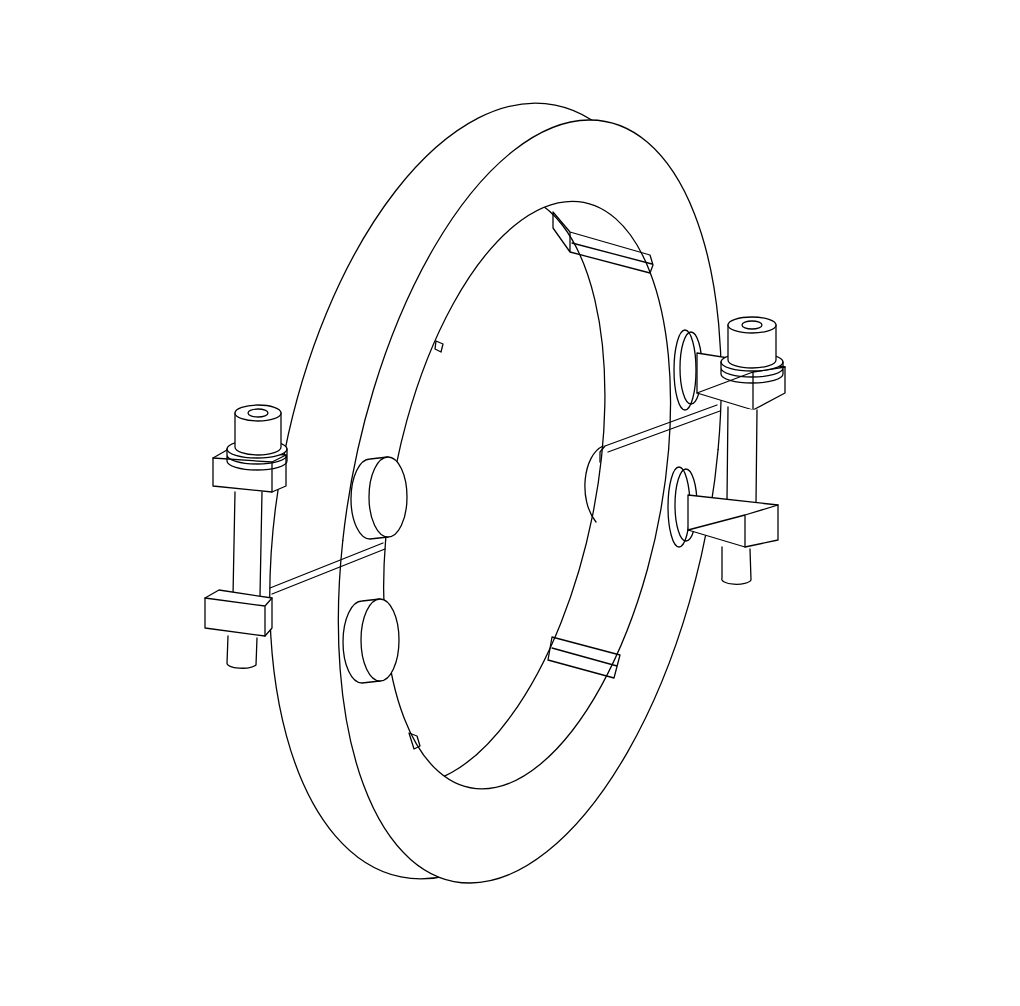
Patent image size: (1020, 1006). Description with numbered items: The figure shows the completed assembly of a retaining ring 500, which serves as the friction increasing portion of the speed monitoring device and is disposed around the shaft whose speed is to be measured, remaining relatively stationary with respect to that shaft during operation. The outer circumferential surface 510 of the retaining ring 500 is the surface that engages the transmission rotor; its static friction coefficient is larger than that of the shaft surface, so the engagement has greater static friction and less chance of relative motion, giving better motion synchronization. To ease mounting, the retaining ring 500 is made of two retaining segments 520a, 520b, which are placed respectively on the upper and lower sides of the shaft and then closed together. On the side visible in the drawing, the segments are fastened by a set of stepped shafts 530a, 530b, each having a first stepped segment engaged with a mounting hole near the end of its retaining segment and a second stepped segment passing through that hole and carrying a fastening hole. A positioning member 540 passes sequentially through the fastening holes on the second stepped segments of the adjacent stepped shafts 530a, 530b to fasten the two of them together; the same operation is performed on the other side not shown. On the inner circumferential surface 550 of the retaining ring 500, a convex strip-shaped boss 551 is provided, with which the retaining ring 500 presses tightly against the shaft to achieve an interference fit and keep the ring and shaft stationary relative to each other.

The retaining ring 500 is at (666, 86).
The outer circumferential surface 510 is at (428, 208).
The retaining segment 520a is at (405, 358).
The retaining segment 520b is at (385, 773).
The stepped shaft 530a is at (230, 473).
The stepped shaft 530b is at (223, 613).
The positioning member 540 is at (252, 430).
The inner circumferential surface 550 is at (648, 330).
The strip-shaped boss 551 is at (583, 650).